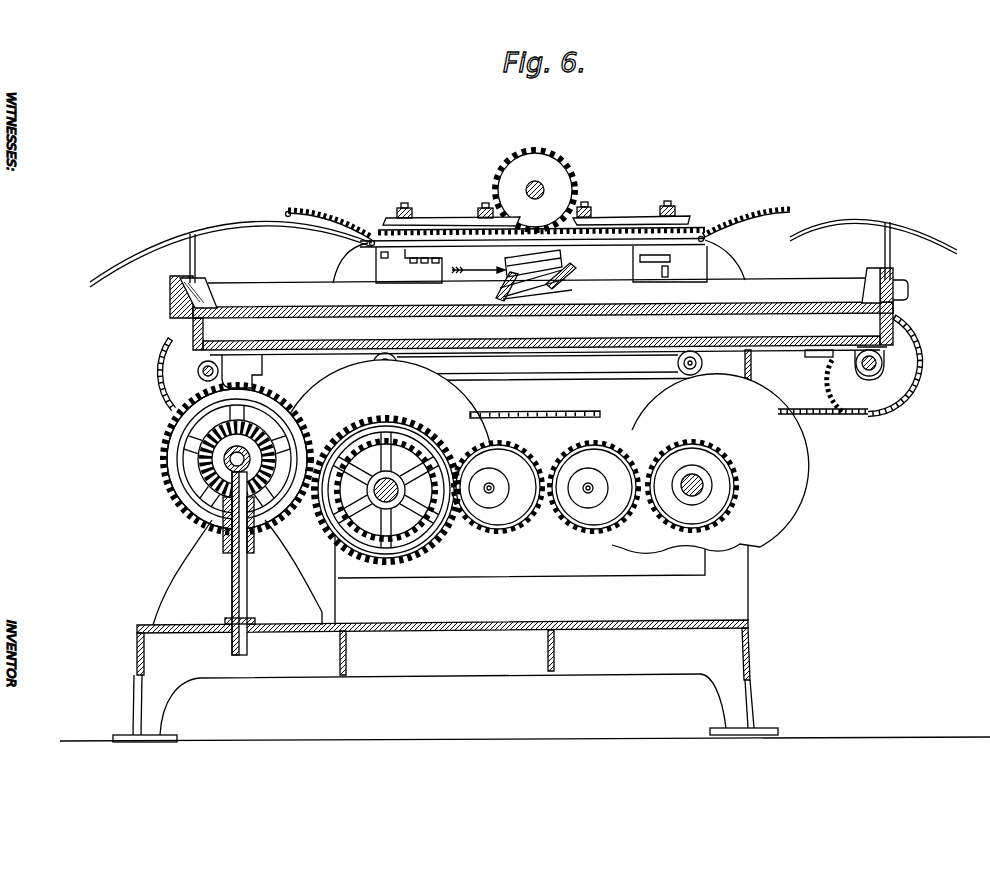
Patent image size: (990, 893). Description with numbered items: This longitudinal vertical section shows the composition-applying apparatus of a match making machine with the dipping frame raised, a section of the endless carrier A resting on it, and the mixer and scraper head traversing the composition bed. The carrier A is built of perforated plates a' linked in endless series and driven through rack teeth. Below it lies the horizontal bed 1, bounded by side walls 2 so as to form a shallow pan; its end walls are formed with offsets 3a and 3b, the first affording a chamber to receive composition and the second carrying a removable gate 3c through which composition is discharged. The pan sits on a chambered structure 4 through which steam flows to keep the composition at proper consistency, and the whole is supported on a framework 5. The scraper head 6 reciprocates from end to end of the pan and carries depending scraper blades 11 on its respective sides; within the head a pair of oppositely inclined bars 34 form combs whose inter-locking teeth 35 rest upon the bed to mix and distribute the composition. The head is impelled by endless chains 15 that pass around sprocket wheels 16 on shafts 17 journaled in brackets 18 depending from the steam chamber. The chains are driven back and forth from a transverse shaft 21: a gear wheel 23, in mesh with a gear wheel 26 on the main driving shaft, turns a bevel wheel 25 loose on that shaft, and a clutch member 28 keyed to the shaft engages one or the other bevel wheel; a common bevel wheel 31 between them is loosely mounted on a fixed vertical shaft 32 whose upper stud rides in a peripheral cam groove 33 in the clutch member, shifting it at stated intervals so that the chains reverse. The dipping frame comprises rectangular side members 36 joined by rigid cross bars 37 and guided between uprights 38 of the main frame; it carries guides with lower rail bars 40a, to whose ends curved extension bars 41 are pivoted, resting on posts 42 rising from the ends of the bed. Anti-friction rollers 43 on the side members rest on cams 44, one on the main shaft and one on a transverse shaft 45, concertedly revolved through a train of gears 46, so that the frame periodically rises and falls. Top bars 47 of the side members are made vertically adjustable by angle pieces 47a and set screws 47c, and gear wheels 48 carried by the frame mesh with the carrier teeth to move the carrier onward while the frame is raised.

The bed 1 is at (783, 303).
The side walls 2 is at (780, 278).
The end wall recess 3a is at (205, 293).
The end wall recess 3b is at (880, 277).
The removable gate 3c is at (898, 265).
The chambered structure 4 is at (536, 333).
The framework 5 is at (525, 681).
The scraper head 6 is at (561, 262).
The scraper blades 11 is at (500, 287).
The endless chains 15 is at (845, 414).
The sprocket wheels 16 is at (180, 388).
The shafts 17 is at (198, 373).
The brackets 18 is at (203, 361).
The transverse shaft 21 is at (177, 497).
The gear wheel 23 is at (222, 466).
The bevel wheel 25 is at (215, 443).
The gear wheel 26 is at (368, 566).
The clutch member 28 is at (165, 431).
The common bevel wheel 31 is at (210, 512).
The fixed vertical shaft 32 is at (231, 589).
The cam groove 33 is at (228, 458).
The inclined bars 34 is at (554, 297).
The inter-locking teeth 35 is at (527, 303).
The side members 36 is at (537, 364).
The cross bars 37 is at (405, 208).
The uprights 38 is at (342, 266).
The lower rail bars 40a is at (622, 238).
The curved extension bars 41 is at (219, 228).
The posts 42 is at (197, 257).
The anti-friction rollers 43 is at (403, 366).
The cams 44 is at (463, 403).
The transverse shaft 45 is at (700, 485).
The train of gears 46 is at (388, 440).
The top bars 47 is at (427, 247).
The angle pieces 47a is at (447, 270).
The set screws 47c is at (368, 240).
The gear wheels 48 is at (535, 147).
The endless carrier A is at (753, 212).
The perforated plates a' is at (325, 212).